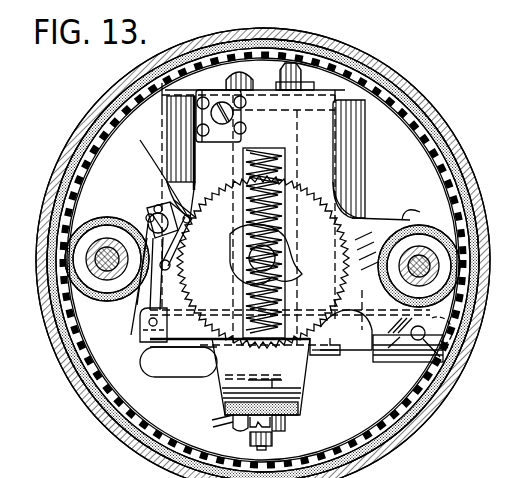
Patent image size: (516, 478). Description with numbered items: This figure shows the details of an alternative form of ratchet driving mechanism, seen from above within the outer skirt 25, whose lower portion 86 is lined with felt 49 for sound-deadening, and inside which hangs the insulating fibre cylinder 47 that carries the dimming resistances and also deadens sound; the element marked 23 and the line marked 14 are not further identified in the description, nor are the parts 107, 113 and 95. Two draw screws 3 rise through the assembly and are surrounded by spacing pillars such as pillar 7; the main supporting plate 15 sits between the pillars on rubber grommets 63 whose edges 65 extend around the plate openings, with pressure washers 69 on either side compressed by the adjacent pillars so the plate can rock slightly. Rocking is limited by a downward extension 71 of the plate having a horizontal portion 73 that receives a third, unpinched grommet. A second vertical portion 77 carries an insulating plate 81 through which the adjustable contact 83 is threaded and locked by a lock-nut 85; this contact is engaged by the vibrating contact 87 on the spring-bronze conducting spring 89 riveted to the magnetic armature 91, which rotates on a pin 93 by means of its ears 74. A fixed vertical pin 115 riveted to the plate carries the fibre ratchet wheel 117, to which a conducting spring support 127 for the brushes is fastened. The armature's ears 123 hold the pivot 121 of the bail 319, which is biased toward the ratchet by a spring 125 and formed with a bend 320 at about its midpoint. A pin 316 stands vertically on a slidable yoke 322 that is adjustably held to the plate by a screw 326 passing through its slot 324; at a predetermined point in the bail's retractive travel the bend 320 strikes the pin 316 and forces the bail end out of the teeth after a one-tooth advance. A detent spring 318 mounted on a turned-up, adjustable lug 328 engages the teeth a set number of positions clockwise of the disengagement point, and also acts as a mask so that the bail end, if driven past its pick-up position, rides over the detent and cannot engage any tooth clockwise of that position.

The housing shell 23 is at (87, 116).
The insulating fibre cylinder 47 is at (76, 180).
The pressure washers 69 is at (58, 214).
The grommet edges 65 is at (62, 236).
The rubber grommets 63 is at (52, 306).
The skirt 25 is at (70, 358).
The felt lining 49 is at (82, 378).
The lower portion of skirt 86 is at (97, 402).
The horizontal portion 73 is at (458, 333).
The pin 93 is at (446, 347).
The draw screws 3 is at (95, 246).
The spacing pillar 7 is at (100, 273).
The section line 14 is at (183, 93).
The detent spring 318 is at (195, 160).
The turned-up lug 328 is at (245, 120).
The cap screw 107 is at (244, 76).
The nut 113 is at (302, 86).
The plate 15 is at (326, 156).
The ratchet wheel 117 is at (346, 212).
The pin 316 is at (178, 290).
The fixed vertical pin 115 is at (278, 244).
The conducting spring support 127 is at (298, 272).
The bend 320 is at (148, 220).
The slidable yoke 322 is at (157, 206).
The slot 324 is at (168, 205).
The screw 326 is at (149, 214).
The bail 319 is at (180, 232).
The pivot 121 is at (158, 322).
The spring 125 is at (141, 312).
The ears 123 is at (140, 330).
The magnetic armature 91 is at (172, 347).
The conducting spring 89 is at (198, 378).
The second vertical portion 77 is at (295, 377).
The vibrating contact 87 is at (274, 380).
The insulating plate 81 is at (296, 416).
The lock-nut 85 is at (240, 431).
The adjustable contact 83 is at (270, 443).
The boss 95 is at (312, 355).
The ears 74 is at (384, 362).
The downward extension 71 is at (401, 362).